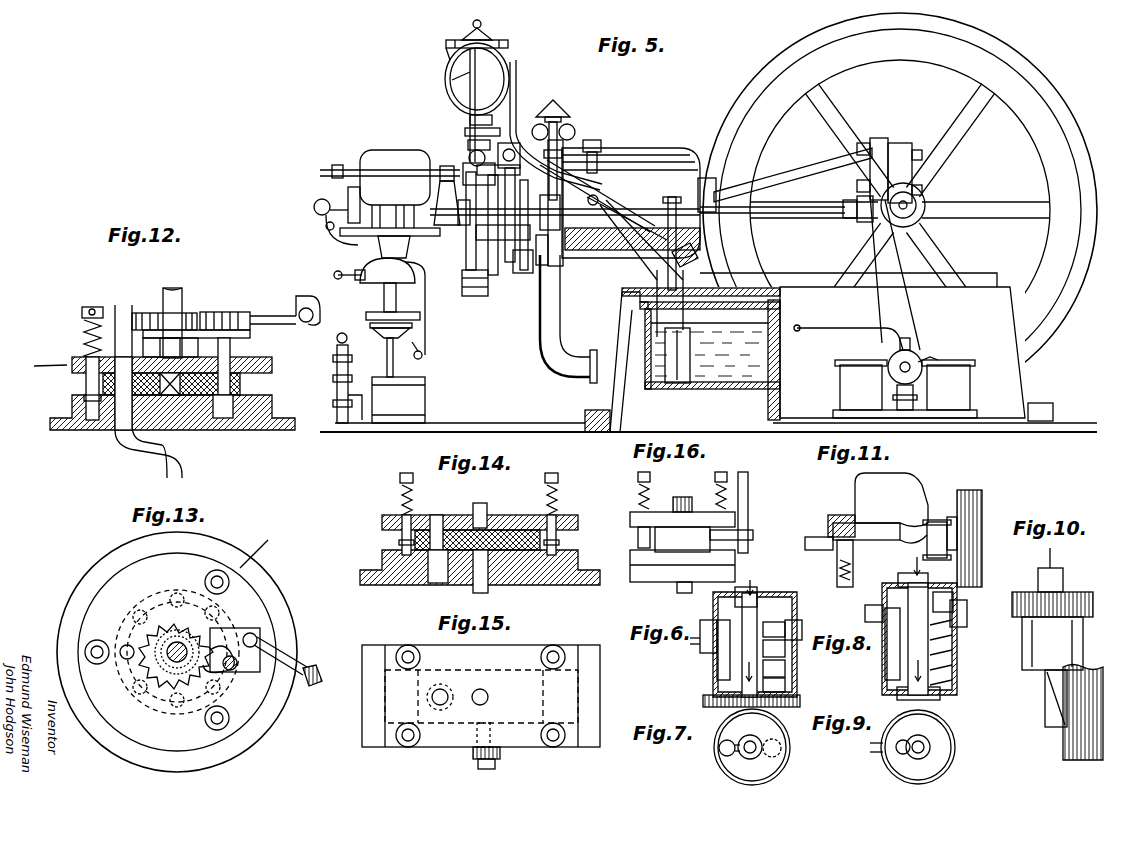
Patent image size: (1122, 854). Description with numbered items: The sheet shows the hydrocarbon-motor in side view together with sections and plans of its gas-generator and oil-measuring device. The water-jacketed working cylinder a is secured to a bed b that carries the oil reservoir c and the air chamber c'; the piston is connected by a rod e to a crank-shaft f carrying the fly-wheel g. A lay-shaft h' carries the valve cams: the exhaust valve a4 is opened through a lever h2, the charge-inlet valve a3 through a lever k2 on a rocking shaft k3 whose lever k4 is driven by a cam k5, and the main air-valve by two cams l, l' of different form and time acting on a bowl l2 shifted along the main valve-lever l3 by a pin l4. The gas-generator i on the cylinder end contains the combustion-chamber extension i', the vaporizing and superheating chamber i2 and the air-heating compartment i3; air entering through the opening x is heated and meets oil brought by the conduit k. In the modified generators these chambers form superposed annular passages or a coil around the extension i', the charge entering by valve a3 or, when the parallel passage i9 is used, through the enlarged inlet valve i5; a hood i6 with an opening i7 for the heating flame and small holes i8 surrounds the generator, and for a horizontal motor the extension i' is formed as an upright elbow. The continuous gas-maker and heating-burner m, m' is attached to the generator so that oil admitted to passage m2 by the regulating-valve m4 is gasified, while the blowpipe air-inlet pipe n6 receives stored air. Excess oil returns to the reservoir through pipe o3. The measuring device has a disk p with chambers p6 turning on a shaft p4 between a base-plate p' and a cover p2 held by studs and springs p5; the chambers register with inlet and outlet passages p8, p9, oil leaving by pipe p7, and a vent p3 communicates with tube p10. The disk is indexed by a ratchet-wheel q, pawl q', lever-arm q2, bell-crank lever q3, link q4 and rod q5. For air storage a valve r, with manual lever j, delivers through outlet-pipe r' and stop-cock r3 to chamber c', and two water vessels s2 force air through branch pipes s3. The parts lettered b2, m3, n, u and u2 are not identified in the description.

In FIG. 5, the working cylinder a is at (585, 240).
In FIG. 6, the working cylinder a is at (755, 693).
In FIG. 10, the working cylinder a is at (1083, 713).
In FIG. 11, the working cylinder a is at (970, 492).
In FIG. 5, the charge-inlet valve a3 is at (460, 248).
In FIG. 6, the charge-inlet valve a3 is at (758, 604).
In FIG. 8, the charge-inlet valve a3 is at (925, 590).
In FIG. 11, the charge-inlet valve a3 is at (937, 522).
In FIG. 5, the exhaust valve a4 is at (510, 280).
In FIG. 5, the base plate or bed b is at (612, 425).
In FIG. 5, the overflow tube b2 is at (672, 385).
In FIG. 5, the hydrocarbon-oil tank or reservoir c is at (701, 354).
In FIG. 5, the tank or air chamber c' is at (549, 125).
In FIG. 5, the rod e is at (800, 172).
In FIG. 5, the crank-shaft f is at (895, 272).
In FIG. 5, the fly-wheel g is at (900, 210).
In FIG. 5, the lay-shaft h' is at (785, 213).
In FIG. 5, the lever h2 is at (540, 295).
In FIG. 5, the gas-generator i is at (390, 193).
In FIG. 6, the gas-generator i is at (758, 644).
In FIG. 7, the gas-generator i is at (756, 747).
In FIG. 8, the gas-generator i is at (924, 641).
In FIG. 9, the gas-generator i is at (918, 746).
In FIG. 11, the gas-generator i is at (891, 500).
In FIG. 6, the extended combustion-chamber i' is at (749, 645).
In FIG. 7, the extended combustion-chamber i' is at (750, 747).
In FIG. 8, the extended combustion-chamber i' is at (918, 639).
In FIG. 9, the extended combustion-chamber i' is at (900, 747).
In FIG. 10, the extended combustion-chamber i' is at (1056, 698).
In FIG. 11, the extended combustion-chamber i' is at (880, 555).
In FIG. 6, the vaporizing and superheating chamber i2 is at (722, 660).
In FIG. 7, the vaporizing and superheating chamber i2 is at (720, 752).
In FIG. 6, the air-heating compartment i3 is at (749, 648).
In FIG. 7, the air-heating compartment i3 is at (770, 737).
In FIG. 8, the air-heating compartment i3 is at (888, 645).
In FIG. 5, the charge-inlet valve i5 is at (323, 230).
In FIG. 11, the charge-inlet valve i5 is at (830, 520).
In FIG. 6, the annular chamber or hood i6 is at (802, 623).
In FIG. 8, the annular chamber or hood i6 is at (968, 612).
In FIG. 6, the opening i7 is at (802, 645).
In FIG. 8, the opening i7 is at (960, 626).
In FIG. 8, the small holes i8 is at (875, 604).
In FIG. 10, the channel passage or pipe i9 is at (1052, 609).
In FIG. 5, the lever j is at (627, 216).
In FIG. 5, the hydrocarbon-oil conduit k is at (510, 201).
In FIG. 5, the lever k2 is at (442, 164).
In FIG. 5, the rocking shaft k3 is at (388, 168).
In FIG. 5, the lever k4 is at (518, 231).
In FIG. 5, the cam k5 is at (530, 265).
In FIG. 5, the cam l is at (501, 214).
In FIG. 5, the cam l' is at (505, 225).
In FIG. 5, the bowl l2 is at (461, 222).
In FIG. 5, the main valve-lever l3 is at (488, 255).
In FIG. 5, the pin l4 is at (505, 260).
In FIG. 5, the continuous gas-maker and heating-burner m is at (392, 329).
In FIG. 5, the continuous gas-maker and heating-burner m' is at (351, 285).
In FIG. 5, the passage m2 is at (339, 237).
In FIG. 5, the pump plunger m3 is at (427, 265).
In FIG. 5, the regulating-valve m4 is at (433, 351).
In FIG. 13, the pin n is at (126, 671).
In FIG. 5, the air-inlet pipe n6 is at (359, 378).
In FIG. 5, the pipe o3 is at (641, 241).
In FIG. 12, the disk p is at (176, 381).
In FIG. 14, the disk p is at (476, 539).
In FIG. 16, the disk p is at (674, 539).
In FIG. 12, the base-plate p' is at (170, 412).
In FIG. 13, the base-plate p' is at (178, 652).
In FIG. 14, the base-plate p' is at (478, 566).
In FIG. 15, the base-plate p' is at (481, 696).
In FIG. 16, the base-plate p' is at (682, 566).
In FIG. 12, the cover p2 is at (272, 360).
In FIG. 13, the cover p2 is at (177, 652).
In FIG. 14, the cover p2 is at (390, 515).
In FIG. 15, the cover p2 is at (481, 696).
In FIG. 16, the cover p2 is at (691, 512).
In FIG. 12, the vent or passage p3 is at (123, 360).
In FIG. 14, the vent or passage p3 is at (477, 506).
In FIG. 15, the vent or passage p3 is at (478, 703).
In FIG. 12, the shaft p4 is at (183, 300).
In FIG. 13, the shaft p4 is at (194, 655).
In FIG. 12, the studs and springs p5 is at (96, 306).
In FIG. 13, the studs and springs p5 is at (95, 655).
In FIG. 14, the studs and springs p5 is at (402, 476).
In FIG. 15, the studs and springs p5 is at (558, 648).
In FIG. 12, the chambers p6 is at (75, 445).
In FIG. 13, the chambers p6 is at (230, 640).
In FIG. 14, the chambers p6 is at (436, 518).
In FIG. 15, the chambers p6 is at (438, 705).
In FIG. 12, the pipe p7 is at (182, 468).
In FIG. 14, the pipe p7 is at (478, 587).
In FIG. 16, the pipe p7 is at (673, 587).
In FIG. 12, the inlet port or passage p8 is at (225, 420).
In FIG. 14, the inlet port or passage p8 is at (434, 575).
In FIG. 12, the outlet port or passage p9 is at (116, 440).
In FIG. 13, the outlet port or passage p9 is at (125, 648).
In FIG. 14, the outlet port or passage p9 is at (490, 585).
In FIG. 12, the tube p10 is at (122, 305).
In FIG. 14, the tube p10 is at (487, 512).
In FIG. 5, the ratchet-wheel q is at (477, 91).
In FIG. 12, the ratchet-wheel q is at (191, 316).
In FIG. 13, the ratchet-wheel q is at (236, 651).
In FIG. 12, the pawl q' is at (225, 309).
In FIG. 13, the pawl q' is at (226, 676).
In FIG. 12, the lever-arm q2 is at (209, 347).
In FIG. 13, the lever-arm q2 is at (262, 636).
In FIG. 5, the bell-crank lever q3 is at (448, 52).
In FIG. 12, the bell-crank lever q3 is at (305, 295).
In FIG. 12, the link q4 is at (272, 316).
In FIG. 13, the link q4 is at (280, 655).
In FIG. 5, the rod q5 is at (452, 80).
In FIG. 5, the valve r is at (623, 192).
In FIG. 5, the outlet-pipe r' is at (597, 148).
In FIG. 5, the stop-cock or regulating-tap r3 is at (696, 254).
In FIG. 5, the vessels s2 is at (905, 378).
In FIG. 5, the branch pipes s3 is at (832, 330).
In FIG. 5, the lever u is at (597, 196).
In FIG. 5, the governor bell u2 is at (562, 160).
In FIG. 6, the opening or pipe x is at (706, 602).